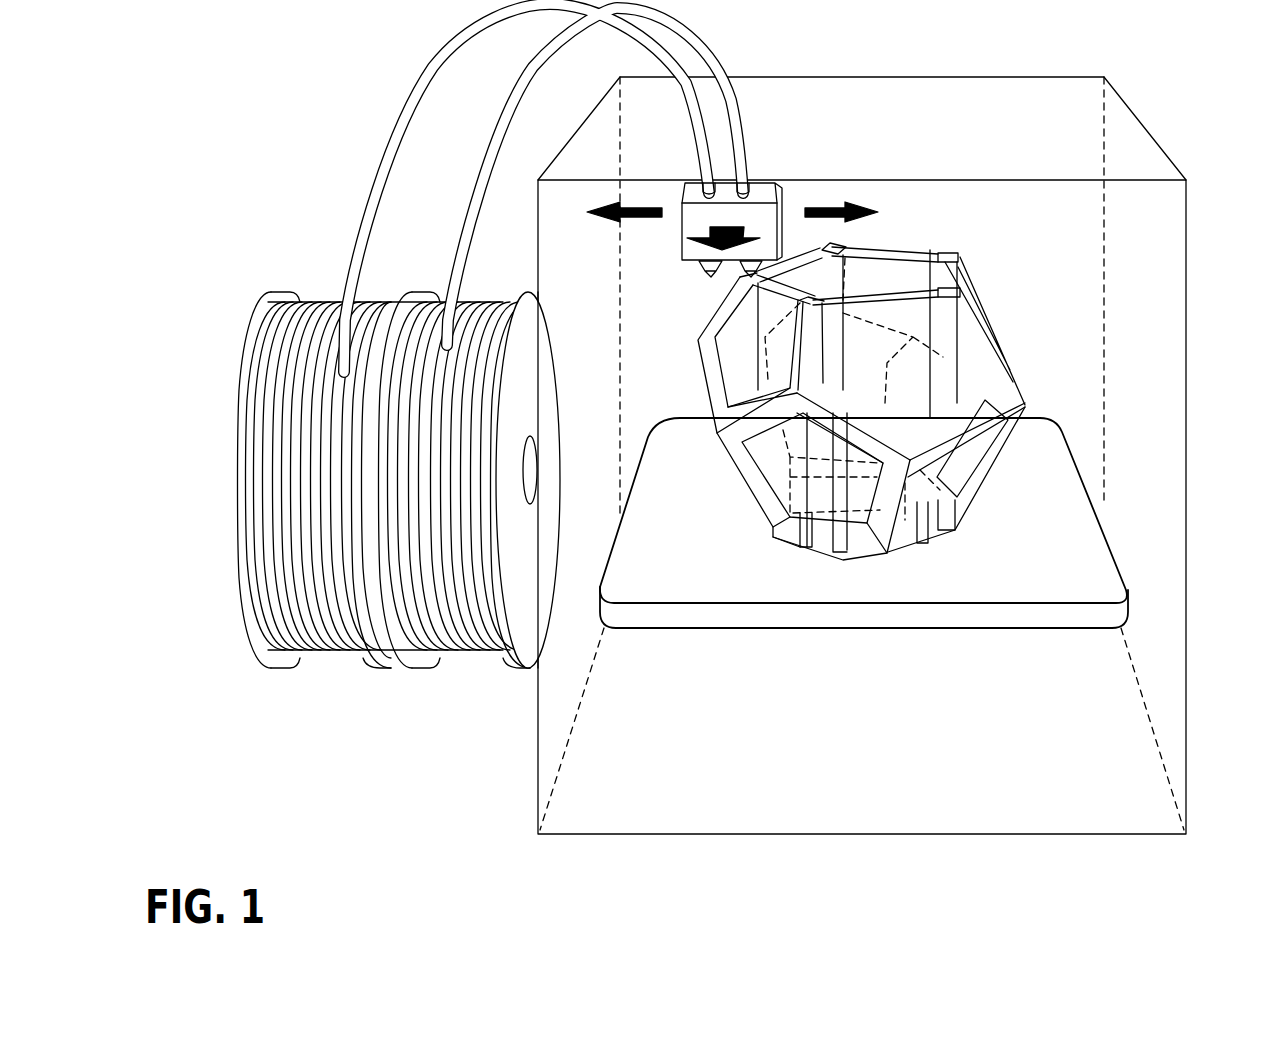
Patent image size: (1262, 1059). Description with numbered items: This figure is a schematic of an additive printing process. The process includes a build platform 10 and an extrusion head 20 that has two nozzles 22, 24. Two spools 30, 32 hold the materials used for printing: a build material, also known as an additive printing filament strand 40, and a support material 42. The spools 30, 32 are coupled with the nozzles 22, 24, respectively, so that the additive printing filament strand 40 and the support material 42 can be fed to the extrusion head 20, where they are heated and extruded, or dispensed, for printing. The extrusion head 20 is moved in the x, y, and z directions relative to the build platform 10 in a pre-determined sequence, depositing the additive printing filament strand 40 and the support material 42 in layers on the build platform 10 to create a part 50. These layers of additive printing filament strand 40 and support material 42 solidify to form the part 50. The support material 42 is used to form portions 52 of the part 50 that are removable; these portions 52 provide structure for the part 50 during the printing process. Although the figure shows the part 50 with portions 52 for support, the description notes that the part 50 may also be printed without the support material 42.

The build platform 10 is at (1027, 552).
The extrusion head 20 is at (763, 213).
The nozzle 22 is at (838, 252).
The nozzle 24 is at (706, 277).
The spool 30 is at (522, 628).
The spool 32 is at (242, 432).
The additive printing filament strand 40 is at (473, 628).
The support material 42 is at (325, 312).
The part 50 is at (985, 433).
The portions 52 is at (907, 317).